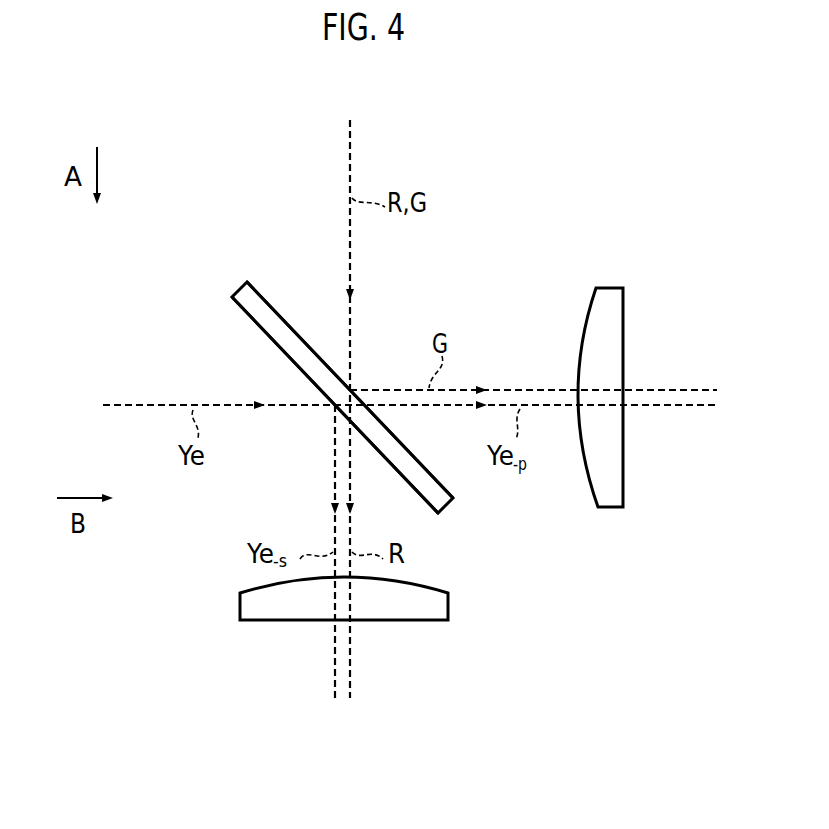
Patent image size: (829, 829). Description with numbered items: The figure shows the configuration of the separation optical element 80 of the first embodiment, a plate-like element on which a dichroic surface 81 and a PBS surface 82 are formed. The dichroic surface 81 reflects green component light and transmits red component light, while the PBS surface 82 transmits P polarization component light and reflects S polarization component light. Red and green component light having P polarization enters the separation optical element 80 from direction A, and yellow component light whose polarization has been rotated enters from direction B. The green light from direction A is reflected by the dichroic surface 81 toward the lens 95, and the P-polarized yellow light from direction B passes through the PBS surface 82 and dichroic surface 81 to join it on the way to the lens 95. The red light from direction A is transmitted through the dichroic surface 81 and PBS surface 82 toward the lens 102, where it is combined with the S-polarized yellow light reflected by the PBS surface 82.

The separation optical element 80 is at (240, 283).
The dichroic surface 81 is at (262, 297).
The PBS surface 82 is at (253, 322).
The lens 95 is at (605, 292).
The lens 102 is at (437, 603).